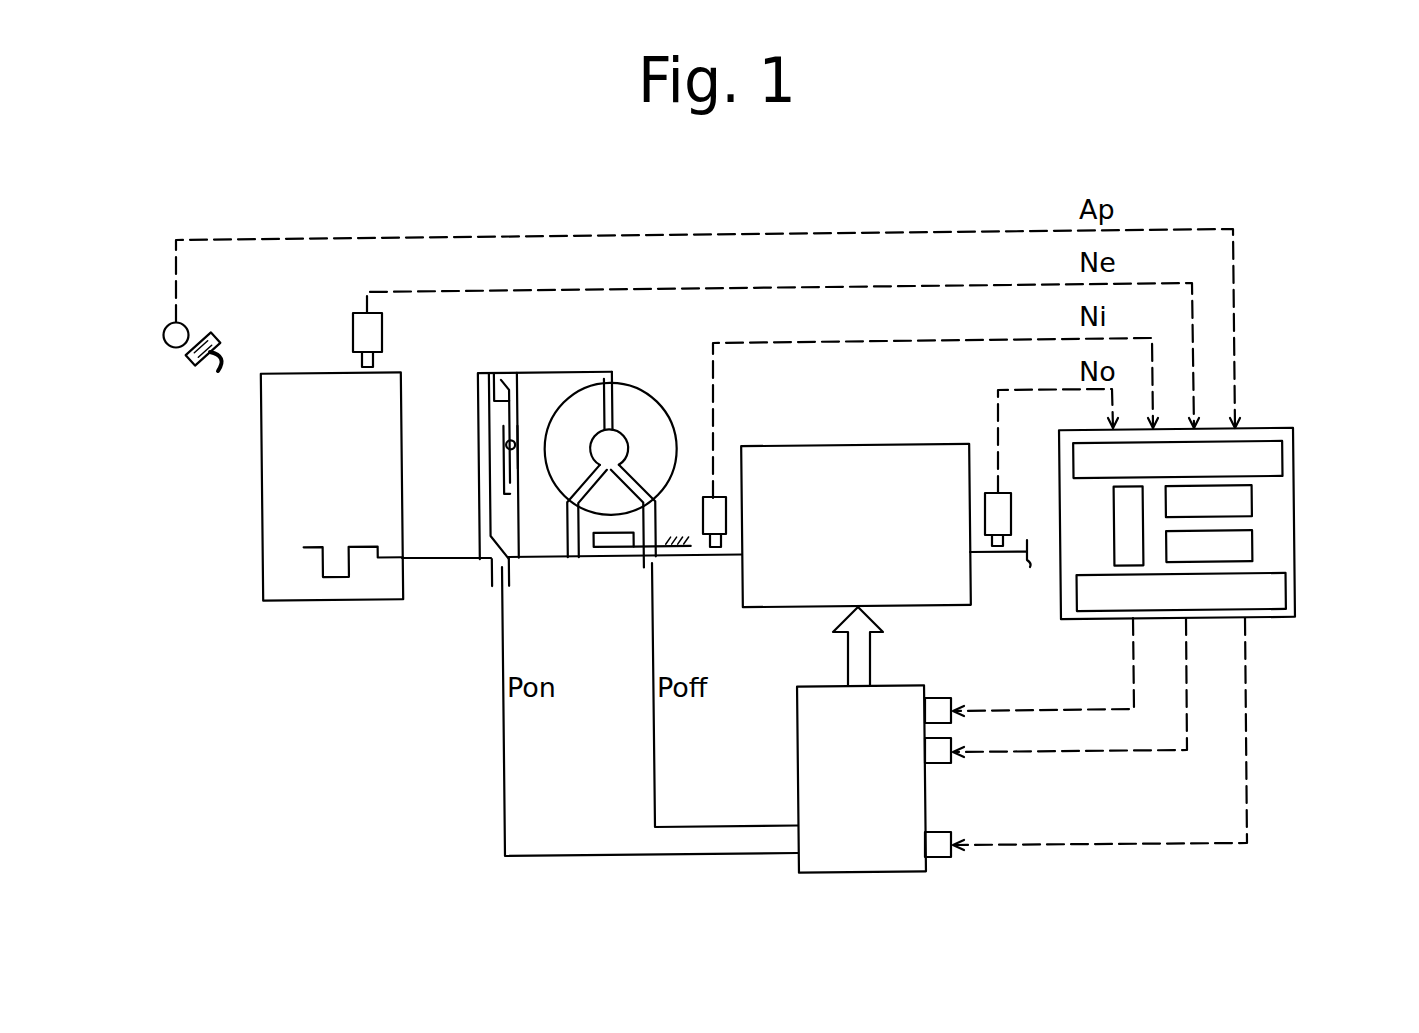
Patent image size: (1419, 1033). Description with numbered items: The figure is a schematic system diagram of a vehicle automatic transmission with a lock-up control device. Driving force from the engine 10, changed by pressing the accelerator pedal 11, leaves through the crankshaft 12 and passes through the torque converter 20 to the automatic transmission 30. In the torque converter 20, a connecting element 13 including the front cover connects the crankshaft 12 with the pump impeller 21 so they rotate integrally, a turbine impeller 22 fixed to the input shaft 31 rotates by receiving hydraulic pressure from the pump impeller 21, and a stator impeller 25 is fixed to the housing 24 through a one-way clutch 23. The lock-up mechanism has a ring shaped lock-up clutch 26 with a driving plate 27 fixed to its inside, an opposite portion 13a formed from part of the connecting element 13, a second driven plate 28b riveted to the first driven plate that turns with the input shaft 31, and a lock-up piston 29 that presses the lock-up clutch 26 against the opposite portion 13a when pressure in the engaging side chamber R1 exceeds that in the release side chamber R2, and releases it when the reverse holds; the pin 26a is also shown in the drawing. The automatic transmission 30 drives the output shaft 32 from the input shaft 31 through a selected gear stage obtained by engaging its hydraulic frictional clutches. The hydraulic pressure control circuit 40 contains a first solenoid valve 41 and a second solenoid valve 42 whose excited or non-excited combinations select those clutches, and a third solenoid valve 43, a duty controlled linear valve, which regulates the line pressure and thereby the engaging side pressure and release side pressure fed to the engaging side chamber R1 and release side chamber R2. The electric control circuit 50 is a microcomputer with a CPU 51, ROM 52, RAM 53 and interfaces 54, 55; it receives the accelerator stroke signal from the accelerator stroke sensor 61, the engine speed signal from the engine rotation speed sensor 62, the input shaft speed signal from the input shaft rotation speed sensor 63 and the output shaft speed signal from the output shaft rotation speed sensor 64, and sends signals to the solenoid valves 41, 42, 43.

The engine 10 is at (262, 475).
The accelerator pedal 11 is at (213, 333).
The crankshaft 12 is at (418, 560).
The connecting element 13 is at (478, 386).
The opposite portion 13a is at (521, 389).
The torque converter 20 is at (586, 362).
The pump impeller 21 is at (618, 394).
The turbine impeller 22 is at (565, 402).
The one-way clutch 23 is at (605, 521).
The housing 24 is at (672, 553).
The stator impeller 25 is at (580, 507).
The lock-up clutch 26 is at (510, 383).
The pin 26a is at (521, 527).
The driving plate 27 is at (490, 407).
The second driven plate 28b is at (508, 465).
The lock-up piston 29 is at (492, 431).
The engaging side chamber R1 is at (490, 502).
The release side chamber R2 is at (563, 545).
The automatic transmission 30 is at (897, 445).
The input shaft 31 is at (704, 557).
The output shaft 32 is at (993, 555).
The hydraulic pressure control circuit 40 is at (782, 768).
The first solenoid valve 41 is at (943, 698).
The second solenoid valve 42 is at (940, 764).
The third solenoid valve 43 is at (943, 858).
The electric control circuit 50 is at (1261, 428).
The CPU 51 is at (1114, 524).
The ROM 52 is at (1253, 503).
The RAM 53 is at (1253, 545).
The interface 54 is at (1284, 457).
The interface 55 is at (1286, 590).
The accelerator stroke sensor 61 is at (176, 348).
The engine rotation speed sensor 62 is at (353, 338).
The input shaft rotation speed sensor 63 is at (703, 506).
The output shaft rotation speed sensor 64 is at (1013, 493).